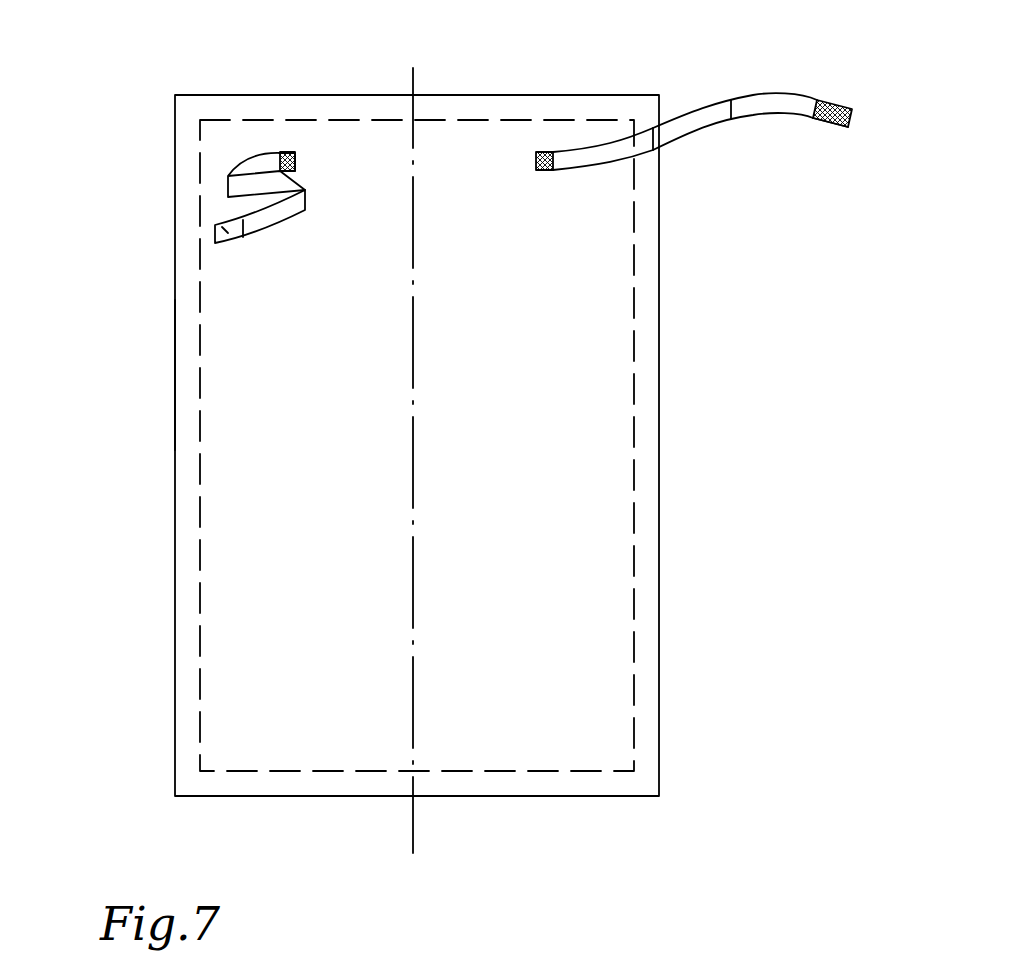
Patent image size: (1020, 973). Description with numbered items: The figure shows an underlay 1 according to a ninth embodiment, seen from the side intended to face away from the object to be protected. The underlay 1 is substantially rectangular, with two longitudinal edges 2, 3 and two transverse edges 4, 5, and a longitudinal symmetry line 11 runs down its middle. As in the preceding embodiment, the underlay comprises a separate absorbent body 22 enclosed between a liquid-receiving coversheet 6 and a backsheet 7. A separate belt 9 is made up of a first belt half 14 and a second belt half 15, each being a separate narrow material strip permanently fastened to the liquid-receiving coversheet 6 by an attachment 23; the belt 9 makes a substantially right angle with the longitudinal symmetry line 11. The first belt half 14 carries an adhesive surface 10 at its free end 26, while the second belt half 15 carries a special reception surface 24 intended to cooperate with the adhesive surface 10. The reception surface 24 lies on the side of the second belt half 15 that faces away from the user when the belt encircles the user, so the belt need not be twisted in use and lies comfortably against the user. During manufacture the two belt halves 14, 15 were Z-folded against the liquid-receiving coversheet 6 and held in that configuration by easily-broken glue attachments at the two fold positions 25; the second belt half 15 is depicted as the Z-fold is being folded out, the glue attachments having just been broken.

The underlay 1 is at (112, 592).
The longitudinal edge 2 is at (659, 480).
The longitudinal edge 3 is at (175, 350).
The transverse edge 4 is at (510, 95).
The transverse edge 5 is at (485, 797).
The liquid-receiving coversheet 6 is at (595, 582).
The backsheet 7 is at (616, 677).
The belt 9 is at (273, 217).
The adhesive surface 10 is at (830, 125).
The longitudinal symmetry line 11 is at (412, 825).
The first belt half 14 is at (758, 82).
The second belt half 15 is at (236, 141).
The absorbent body 22 is at (634, 310).
The attachment 23 is at (292, 152).
The reception surface 24 is at (210, 214).
The fold position 25 is at (306, 193).
The free end 26 is at (855, 110).